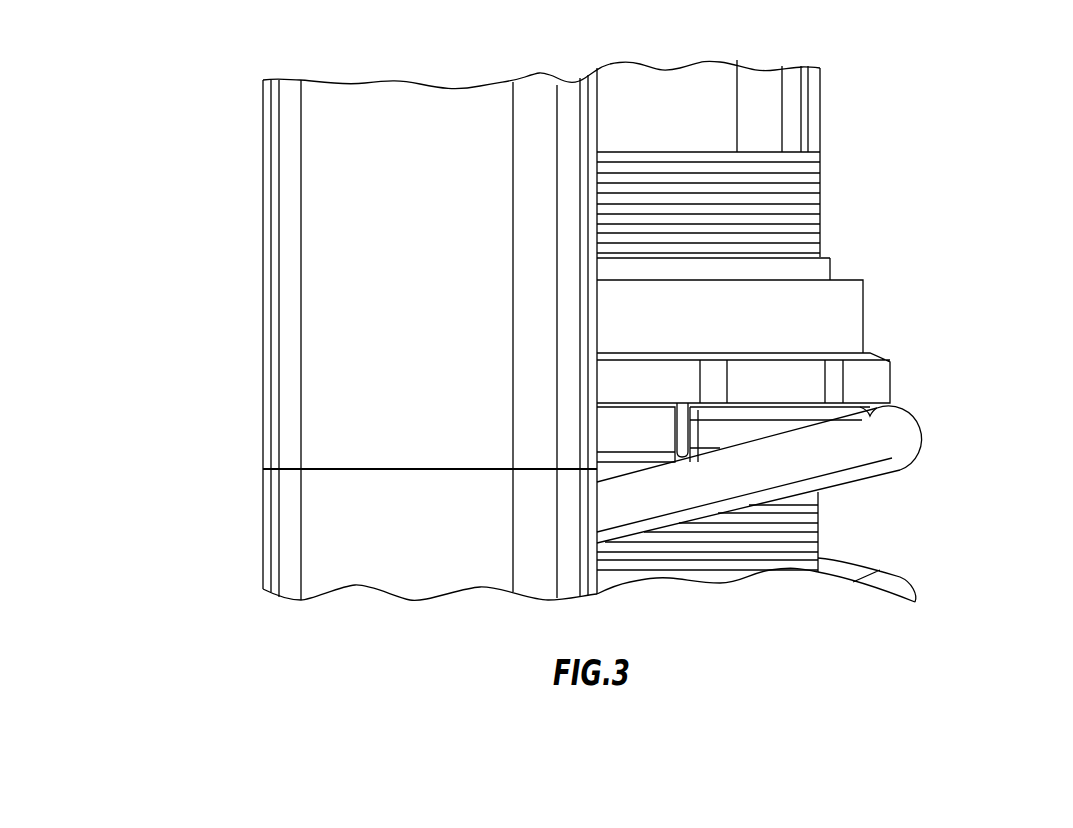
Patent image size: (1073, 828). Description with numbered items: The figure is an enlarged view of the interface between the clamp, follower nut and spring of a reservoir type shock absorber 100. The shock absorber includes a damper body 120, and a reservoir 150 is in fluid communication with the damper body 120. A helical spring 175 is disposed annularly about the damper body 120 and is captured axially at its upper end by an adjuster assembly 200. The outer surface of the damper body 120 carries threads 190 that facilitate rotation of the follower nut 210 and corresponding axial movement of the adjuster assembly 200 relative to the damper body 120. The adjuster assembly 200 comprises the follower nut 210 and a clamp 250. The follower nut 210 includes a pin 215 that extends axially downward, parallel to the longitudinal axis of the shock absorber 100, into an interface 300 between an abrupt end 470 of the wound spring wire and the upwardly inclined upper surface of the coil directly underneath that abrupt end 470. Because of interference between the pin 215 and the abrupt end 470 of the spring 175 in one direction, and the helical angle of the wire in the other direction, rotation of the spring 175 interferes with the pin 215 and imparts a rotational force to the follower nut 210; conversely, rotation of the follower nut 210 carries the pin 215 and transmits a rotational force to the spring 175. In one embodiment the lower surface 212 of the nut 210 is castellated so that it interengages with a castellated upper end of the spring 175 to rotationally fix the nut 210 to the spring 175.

The shock absorber 100 is at (977, 148).
The reservoir 150 is at (260, 252).
The clamp 250 is at (850, 298).
The follower nut 210 is at (867, 382).
The adjuster assembly 200 is at (935, 410).
The helical spring 175 is at (917, 442).
The damper body 120 is at (820, 509).
The threads 190 is at (810, 538).
The lower surface 212 is at (750, 422).
The pin 215 is at (693, 423).
The interface 300 is at (657, 428).
The abrupt end 470 is at (680, 410).